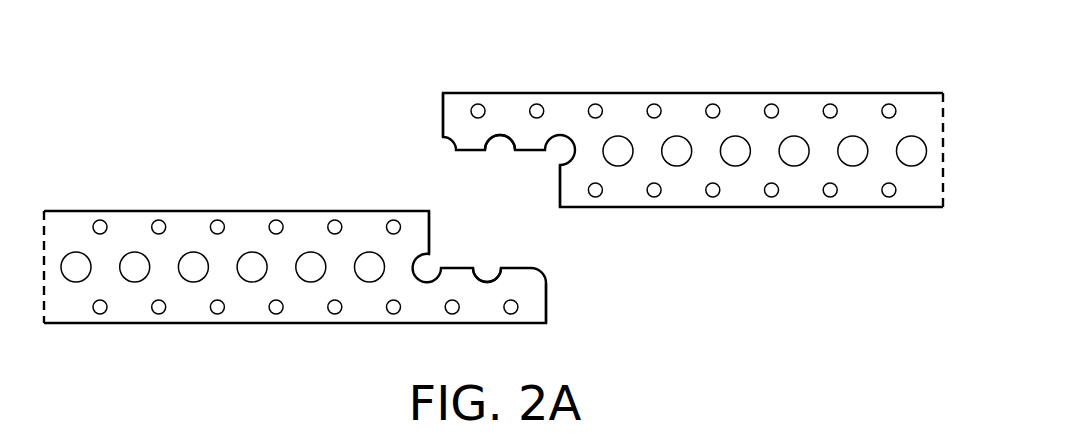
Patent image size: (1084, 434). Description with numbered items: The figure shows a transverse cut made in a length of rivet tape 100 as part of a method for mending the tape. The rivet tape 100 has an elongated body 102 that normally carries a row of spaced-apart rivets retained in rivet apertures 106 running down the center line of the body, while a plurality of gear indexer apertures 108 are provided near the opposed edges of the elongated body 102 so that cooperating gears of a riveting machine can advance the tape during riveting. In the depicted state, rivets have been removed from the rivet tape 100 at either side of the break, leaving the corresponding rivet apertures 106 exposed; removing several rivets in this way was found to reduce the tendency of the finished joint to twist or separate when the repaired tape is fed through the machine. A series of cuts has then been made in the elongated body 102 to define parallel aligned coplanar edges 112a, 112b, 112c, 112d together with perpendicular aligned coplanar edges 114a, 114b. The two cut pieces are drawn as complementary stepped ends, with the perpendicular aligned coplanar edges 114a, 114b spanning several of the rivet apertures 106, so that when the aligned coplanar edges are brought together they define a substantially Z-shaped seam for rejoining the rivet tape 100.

The rivet tape 100 is at (753, 78).
The elongated body 102 is at (925, 105).
The rivet apertures 106 is at (136, 253).
The gear indexer apertures 108 is at (218, 220).
The parallel aligned coplanar edge 112a is at (432, 230).
The parallel aligned coplanar edge 112b is at (442, 117).
The parallel aligned coplanar edge 112c is at (547, 303).
The parallel aligned coplanar edge 112d is at (559, 190).
The perpendicular aligned coplanar edge 114a is at (480, 150).
The perpendicular aligned coplanar edge 114b is at (451, 268).